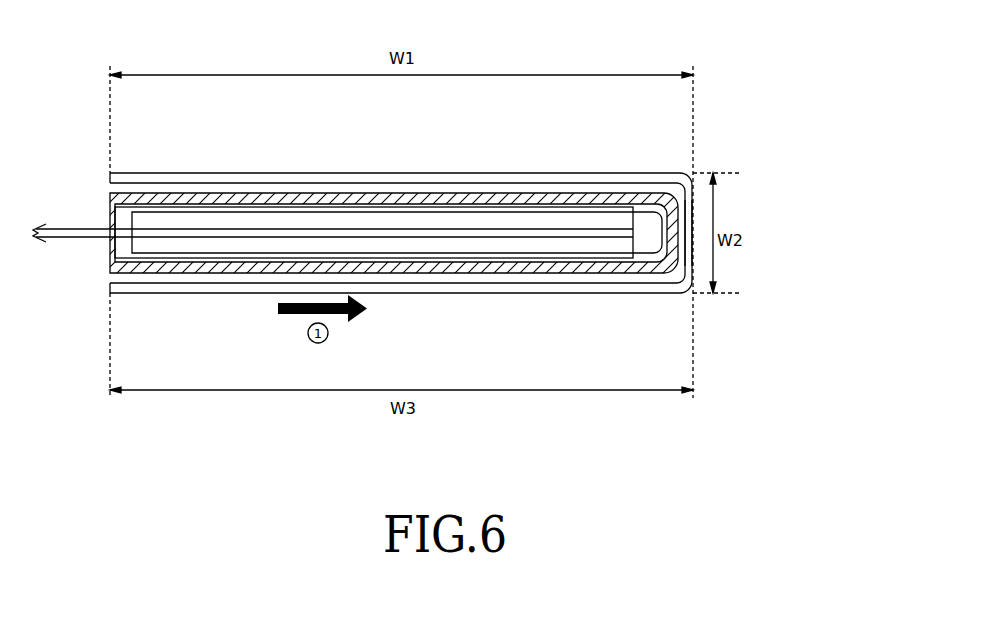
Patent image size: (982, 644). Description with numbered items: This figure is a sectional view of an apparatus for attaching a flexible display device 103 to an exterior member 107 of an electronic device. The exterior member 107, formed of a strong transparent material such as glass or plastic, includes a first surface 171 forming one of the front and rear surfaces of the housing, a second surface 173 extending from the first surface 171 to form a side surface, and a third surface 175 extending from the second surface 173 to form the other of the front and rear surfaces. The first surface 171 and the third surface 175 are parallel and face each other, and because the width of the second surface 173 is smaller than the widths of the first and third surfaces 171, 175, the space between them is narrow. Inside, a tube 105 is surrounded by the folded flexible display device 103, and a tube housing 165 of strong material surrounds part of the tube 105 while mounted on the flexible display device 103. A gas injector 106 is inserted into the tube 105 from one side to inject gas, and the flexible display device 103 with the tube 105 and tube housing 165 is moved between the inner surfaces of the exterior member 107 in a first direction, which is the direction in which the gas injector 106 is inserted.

The flexible display device 103 is at (593, 198).
The tube 105 is at (650, 243).
The gas injector 106 is at (67, 238).
The exterior member 107 is at (478, 221).
The tube housing 165 is at (453, 255).
The first surface 171 is at (642, 173).
The second surface 173 is at (690, 212).
The third surface 175 is at (453, 280).